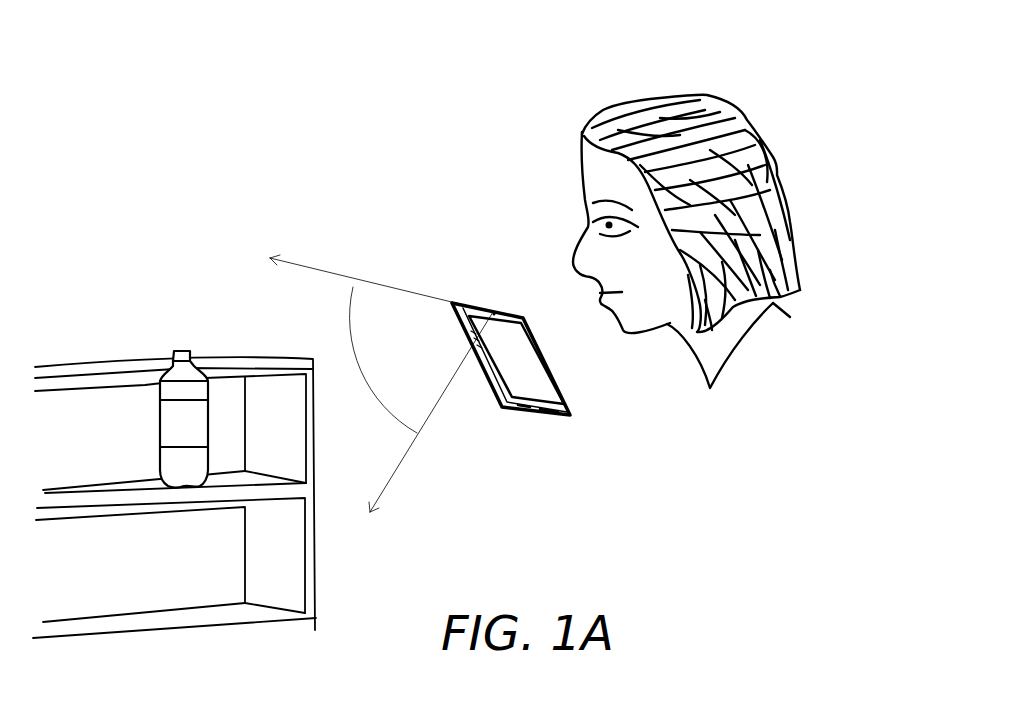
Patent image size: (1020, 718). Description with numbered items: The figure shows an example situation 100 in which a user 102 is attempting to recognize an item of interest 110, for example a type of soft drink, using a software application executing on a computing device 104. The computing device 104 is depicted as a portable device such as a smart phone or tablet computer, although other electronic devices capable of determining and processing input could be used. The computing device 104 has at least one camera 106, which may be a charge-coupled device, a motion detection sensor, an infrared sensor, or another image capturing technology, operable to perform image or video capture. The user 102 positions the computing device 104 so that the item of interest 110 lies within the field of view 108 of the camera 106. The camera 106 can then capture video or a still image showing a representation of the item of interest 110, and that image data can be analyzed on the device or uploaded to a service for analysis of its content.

The example situation 100 is at (849, 123).
The user 102 is at (812, 382).
The computing device 104 is at (491, 342).
The camera 106 is at (495, 311).
The field of view 108 is at (417, 371).
The item of interest 110 is at (170, 368).